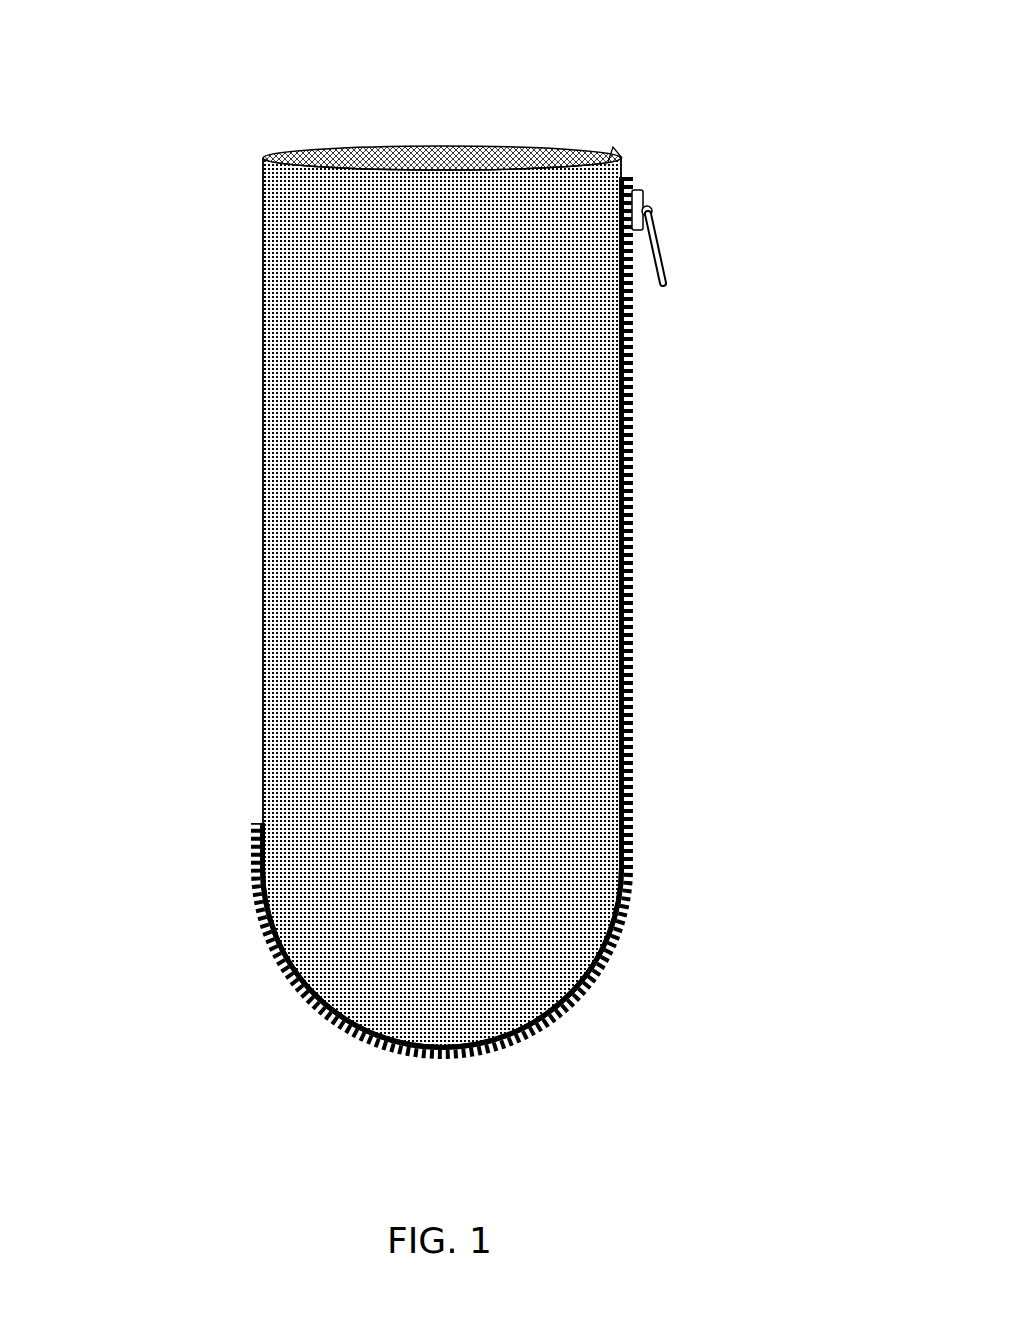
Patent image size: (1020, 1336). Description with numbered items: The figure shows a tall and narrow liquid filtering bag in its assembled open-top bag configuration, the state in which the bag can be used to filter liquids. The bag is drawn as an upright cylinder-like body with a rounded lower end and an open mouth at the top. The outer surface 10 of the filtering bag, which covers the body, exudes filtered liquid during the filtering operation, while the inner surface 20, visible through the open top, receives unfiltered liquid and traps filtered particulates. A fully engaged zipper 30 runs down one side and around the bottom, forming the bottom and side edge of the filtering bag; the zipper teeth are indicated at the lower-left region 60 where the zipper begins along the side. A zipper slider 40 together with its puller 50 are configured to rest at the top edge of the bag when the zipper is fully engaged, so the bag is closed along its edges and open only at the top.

The outer surface 10 is at (290, 213).
The inner surface 20 is at (363, 157).
The zipper 30 is at (420, 1062).
The zipper slider 40 is at (645, 195).
The puller 50 is at (658, 245).
The zipper 60 is at (255, 812).